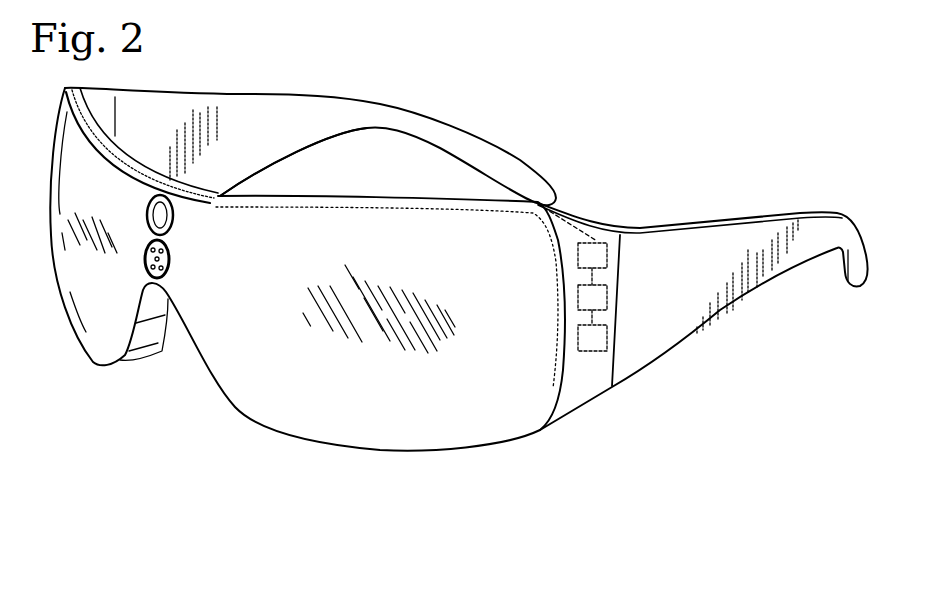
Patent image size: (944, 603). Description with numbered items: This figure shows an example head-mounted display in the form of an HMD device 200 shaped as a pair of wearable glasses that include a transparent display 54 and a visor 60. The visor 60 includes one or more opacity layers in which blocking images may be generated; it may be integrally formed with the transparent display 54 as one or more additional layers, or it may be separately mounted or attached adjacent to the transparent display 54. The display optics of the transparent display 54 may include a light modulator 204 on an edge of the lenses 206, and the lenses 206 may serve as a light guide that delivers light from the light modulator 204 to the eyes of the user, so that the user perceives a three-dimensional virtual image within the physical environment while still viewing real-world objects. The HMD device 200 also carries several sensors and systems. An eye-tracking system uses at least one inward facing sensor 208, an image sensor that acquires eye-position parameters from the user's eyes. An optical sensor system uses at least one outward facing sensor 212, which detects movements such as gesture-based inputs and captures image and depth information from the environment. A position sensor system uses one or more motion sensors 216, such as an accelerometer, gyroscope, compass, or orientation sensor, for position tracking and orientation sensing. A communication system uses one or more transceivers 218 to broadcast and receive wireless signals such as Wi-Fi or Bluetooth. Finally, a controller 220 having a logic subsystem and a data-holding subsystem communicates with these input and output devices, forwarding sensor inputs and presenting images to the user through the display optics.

The HMD device 200 is at (550, 86).
The transparent display 54 is at (219, 189).
The visor 60 is at (71, 87).
The light modulator 204 is at (88, 91).
The lenses 206 is at (140, 153).
The outward facing sensor 212 is at (151, 210).
The inward facing sensor 208 is at (146, 269).
The motion sensors 216 is at (600, 231).
The transceivers 218 is at (616, 290).
The controller 220 is at (616, 333).